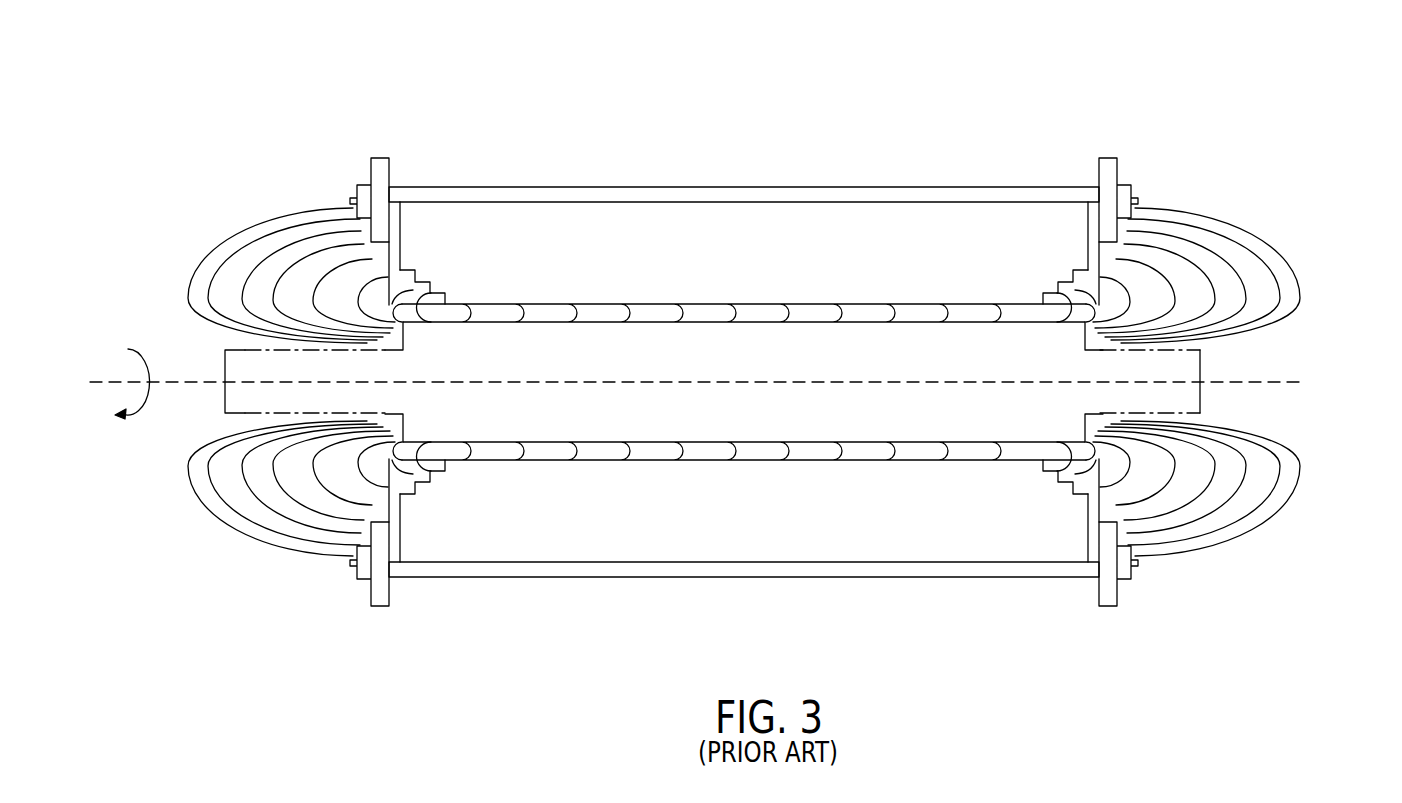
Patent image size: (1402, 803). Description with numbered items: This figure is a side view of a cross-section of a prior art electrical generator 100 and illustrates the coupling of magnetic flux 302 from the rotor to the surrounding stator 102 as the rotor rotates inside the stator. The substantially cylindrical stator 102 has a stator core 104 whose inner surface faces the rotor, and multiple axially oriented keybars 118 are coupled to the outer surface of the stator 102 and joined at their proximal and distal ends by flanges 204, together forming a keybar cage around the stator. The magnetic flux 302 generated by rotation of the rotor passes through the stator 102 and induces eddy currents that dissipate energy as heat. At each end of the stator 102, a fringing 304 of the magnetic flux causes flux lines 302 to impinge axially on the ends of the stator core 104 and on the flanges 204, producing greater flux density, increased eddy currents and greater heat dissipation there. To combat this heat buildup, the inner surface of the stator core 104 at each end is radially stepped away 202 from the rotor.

The electrical generator 100 is at (366, 96).
The stator 102 is at (710, 213).
The stator core 104 is at (848, 213).
The keybar 118 is at (608, 187).
The radially stepped inner surface 202 is at (433, 257).
The flange 204 is at (381, 158).
The magnetic flux 302 is at (298, 247).
The fringing magnetic flux 304 is at (150, 262).